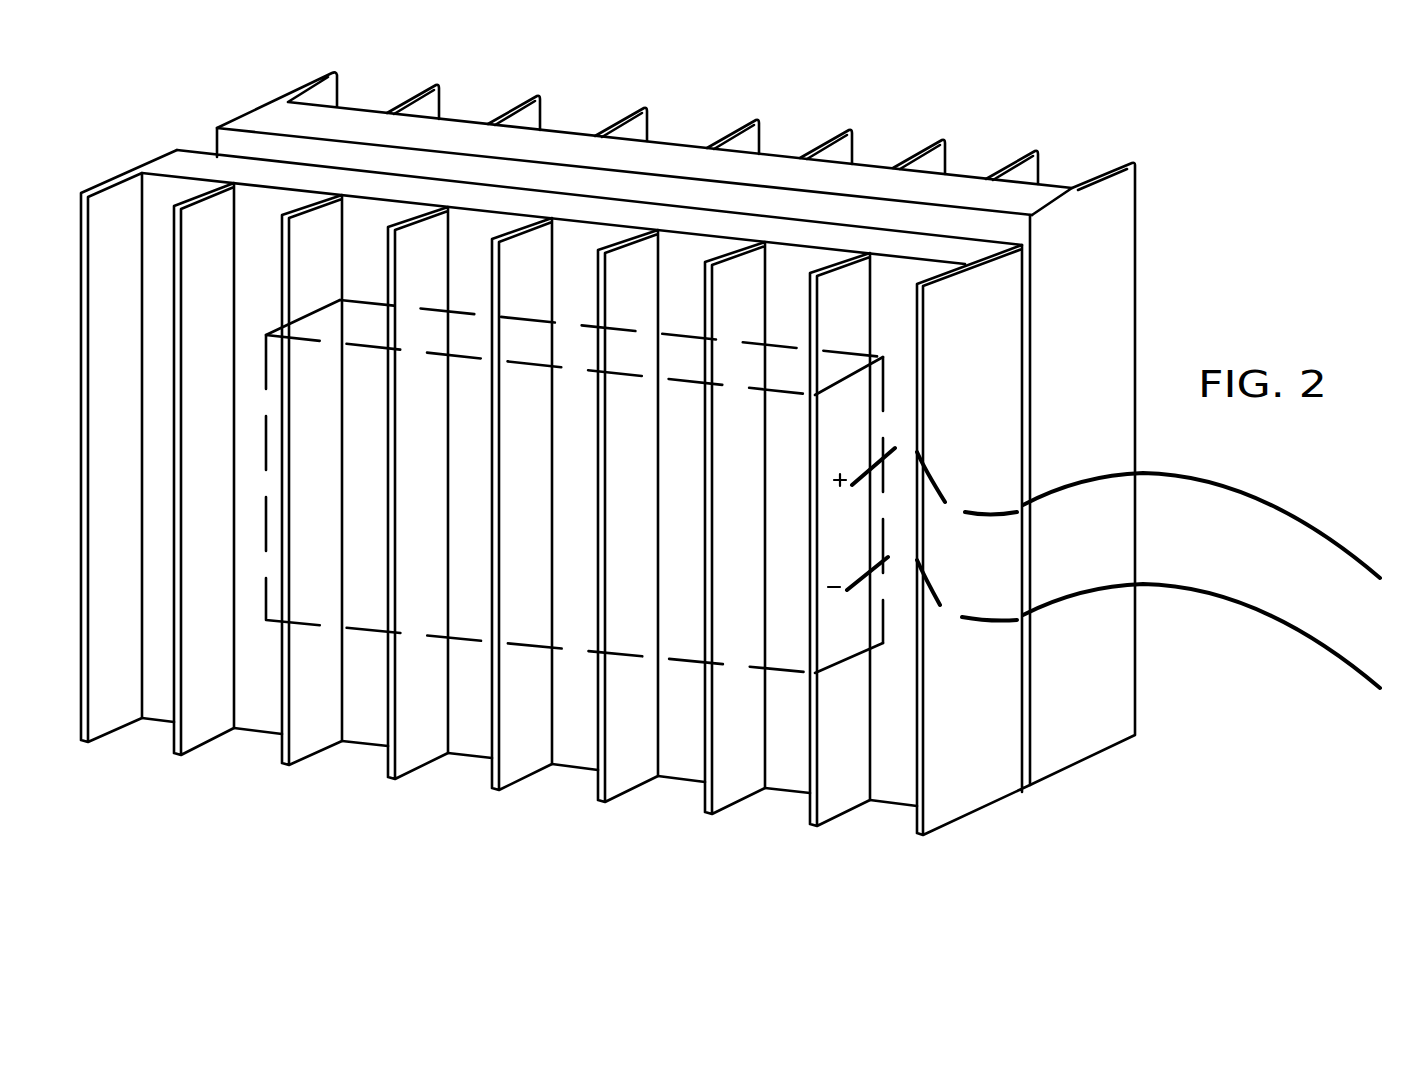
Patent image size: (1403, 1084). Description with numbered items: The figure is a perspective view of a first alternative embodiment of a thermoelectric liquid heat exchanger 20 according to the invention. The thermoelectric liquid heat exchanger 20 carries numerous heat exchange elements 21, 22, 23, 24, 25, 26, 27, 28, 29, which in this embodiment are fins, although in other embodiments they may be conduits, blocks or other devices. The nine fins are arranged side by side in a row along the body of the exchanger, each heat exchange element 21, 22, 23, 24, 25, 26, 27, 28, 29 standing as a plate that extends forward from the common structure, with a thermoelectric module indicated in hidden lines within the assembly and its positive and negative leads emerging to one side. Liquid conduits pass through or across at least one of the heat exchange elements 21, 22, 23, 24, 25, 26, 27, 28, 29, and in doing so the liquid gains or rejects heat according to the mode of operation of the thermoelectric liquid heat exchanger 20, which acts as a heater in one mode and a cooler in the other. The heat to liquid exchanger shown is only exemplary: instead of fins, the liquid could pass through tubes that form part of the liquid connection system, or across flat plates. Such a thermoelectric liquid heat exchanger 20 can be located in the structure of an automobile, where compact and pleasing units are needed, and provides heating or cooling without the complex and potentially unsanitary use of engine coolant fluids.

The thermoelectric liquid heat exchanger 20 is at (868, 650).
The heat exchange element 21 is at (95, 742).
The heat exchange element 22 is at (188, 755).
The heat exchange element 23 is at (296, 765).
The heat exchange element 24 is at (402, 779).
The heat exchange element 25 is at (506, 790).
The heat exchange element 26 is at (612, 802).
The heat exchange element 27 is at (719, 814).
The heat exchange element 28 is at (824, 826).
The heat exchange element 29 is at (930, 838).